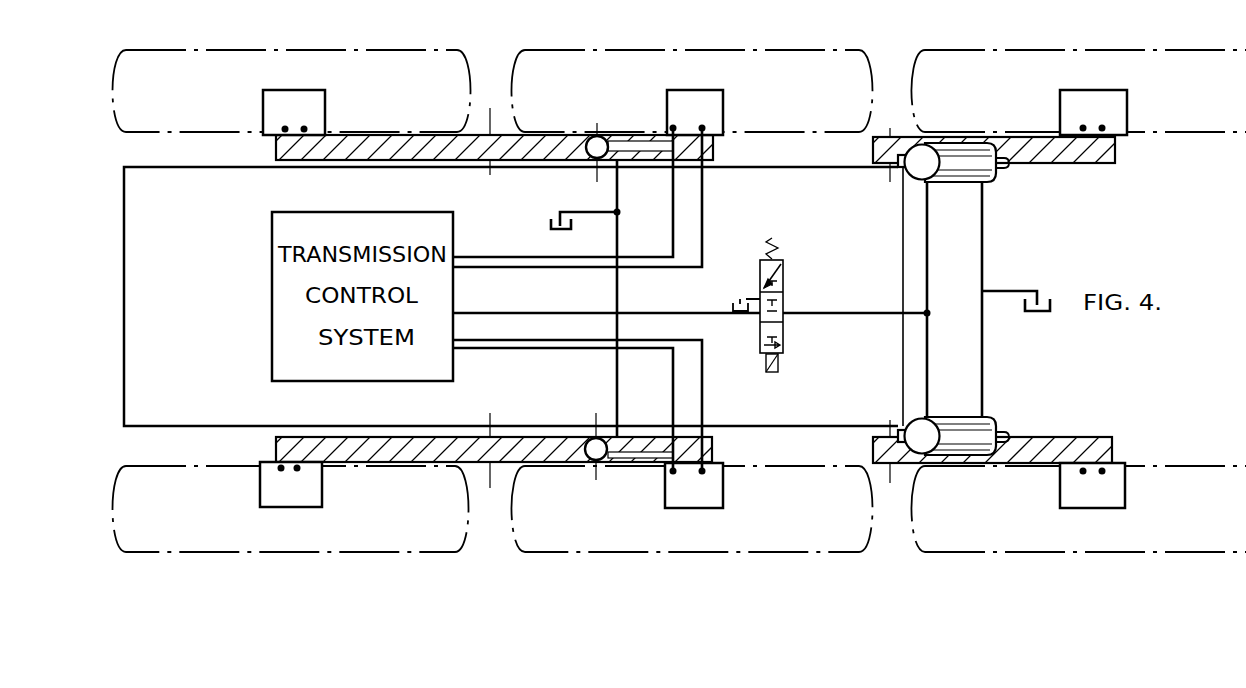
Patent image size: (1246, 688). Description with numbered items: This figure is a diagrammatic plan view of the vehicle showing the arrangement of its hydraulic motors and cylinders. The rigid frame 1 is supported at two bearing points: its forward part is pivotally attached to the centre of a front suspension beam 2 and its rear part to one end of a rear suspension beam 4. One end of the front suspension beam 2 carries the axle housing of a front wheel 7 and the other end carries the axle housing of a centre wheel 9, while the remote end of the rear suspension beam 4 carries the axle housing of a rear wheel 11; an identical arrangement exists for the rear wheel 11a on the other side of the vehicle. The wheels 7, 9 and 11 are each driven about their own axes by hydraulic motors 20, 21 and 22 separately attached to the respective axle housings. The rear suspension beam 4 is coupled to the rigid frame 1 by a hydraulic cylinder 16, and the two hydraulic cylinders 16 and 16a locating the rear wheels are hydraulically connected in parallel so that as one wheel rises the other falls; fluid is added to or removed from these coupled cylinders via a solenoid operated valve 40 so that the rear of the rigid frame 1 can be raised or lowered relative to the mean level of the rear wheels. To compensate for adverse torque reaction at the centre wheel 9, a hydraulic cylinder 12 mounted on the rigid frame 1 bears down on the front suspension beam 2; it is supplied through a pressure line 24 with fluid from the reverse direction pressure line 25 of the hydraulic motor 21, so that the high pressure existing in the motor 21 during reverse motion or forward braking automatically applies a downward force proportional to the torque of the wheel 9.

The rigid frame 1 is at (805, 167).
The front suspension beam 2 is at (276, 448).
The rear suspension beam 4 is at (1072, 445).
The front wheel 7 is at (400, 544).
The centre wheel 9 is at (832, 543).
The rear wheel 11 is at (1227, 543).
The rear wheel 11a is at (1157, 63).
The hydraulic cylinder 12 is at (578, 462).
The hydraulic cylinder 16 is at (953, 424).
The hydraulic cylinder 16a is at (968, 180).
The hydraulic motor 20 is at (293, 497).
The hydraulic motor 21 is at (695, 500).
The hydraulic motor 22 is at (1088, 505).
The pressure line 24 is at (633, 464).
The reverse direction pressure line 25 is at (672, 366).
The solenoid operated valve 40 is at (783, 267).